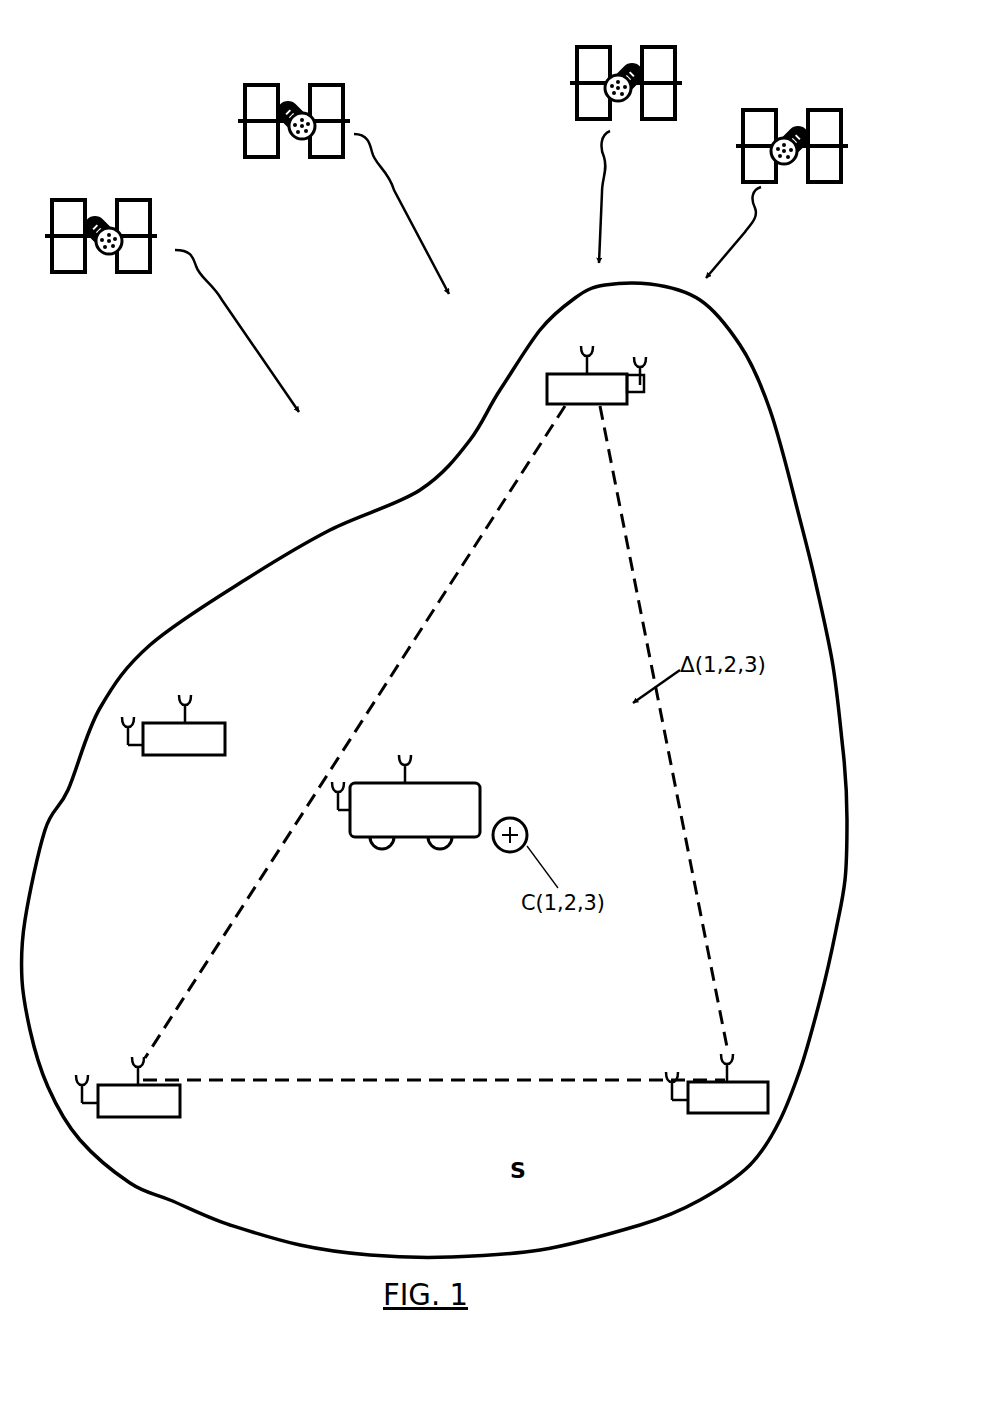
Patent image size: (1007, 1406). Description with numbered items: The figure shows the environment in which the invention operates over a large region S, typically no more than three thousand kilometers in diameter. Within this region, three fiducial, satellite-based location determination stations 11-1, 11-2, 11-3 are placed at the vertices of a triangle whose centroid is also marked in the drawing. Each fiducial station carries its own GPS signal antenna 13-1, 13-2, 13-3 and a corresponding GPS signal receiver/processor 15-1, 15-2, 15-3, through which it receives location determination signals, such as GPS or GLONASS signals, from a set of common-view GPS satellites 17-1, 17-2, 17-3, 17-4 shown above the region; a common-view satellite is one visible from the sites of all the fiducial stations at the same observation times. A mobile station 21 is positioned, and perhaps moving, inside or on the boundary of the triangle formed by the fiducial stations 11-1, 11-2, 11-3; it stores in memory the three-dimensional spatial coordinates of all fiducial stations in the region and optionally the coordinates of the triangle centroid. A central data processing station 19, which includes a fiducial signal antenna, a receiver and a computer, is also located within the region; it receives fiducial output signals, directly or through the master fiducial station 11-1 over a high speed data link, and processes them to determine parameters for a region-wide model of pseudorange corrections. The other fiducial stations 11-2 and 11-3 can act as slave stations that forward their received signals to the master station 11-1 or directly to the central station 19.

The fiducial location determination station 11-1 is at (174, 1099).
The fiducial location determination station 11-2 is at (681, 1092).
The fiducial location determination station 11-3 is at (630, 402).
The GPS signal antenna 13-1 is at (148, 1060).
The GPS signal antenna 13-2 is at (724, 1061).
The GPS signal antenna 13-3 is at (594, 354).
The GPS signal receiver/processor 15-1 is at (157, 1100).
The GPS signal receiver/processor 15-2 is at (700, 1097).
The GPS signal receiver/processor 15-3 is at (598, 384).
The common-view GPS satellite 17-1 is at (103, 220).
The common-view GPS satellite 17-2 is at (292, 108).
The common-view GPS satellite 17-3 is at (626, 73).
The common-view GPS satellite 17-4 is at (796, 134).
The central data processing station 19 is at (175, 745).
The mobile station 21 is at (465, 803).